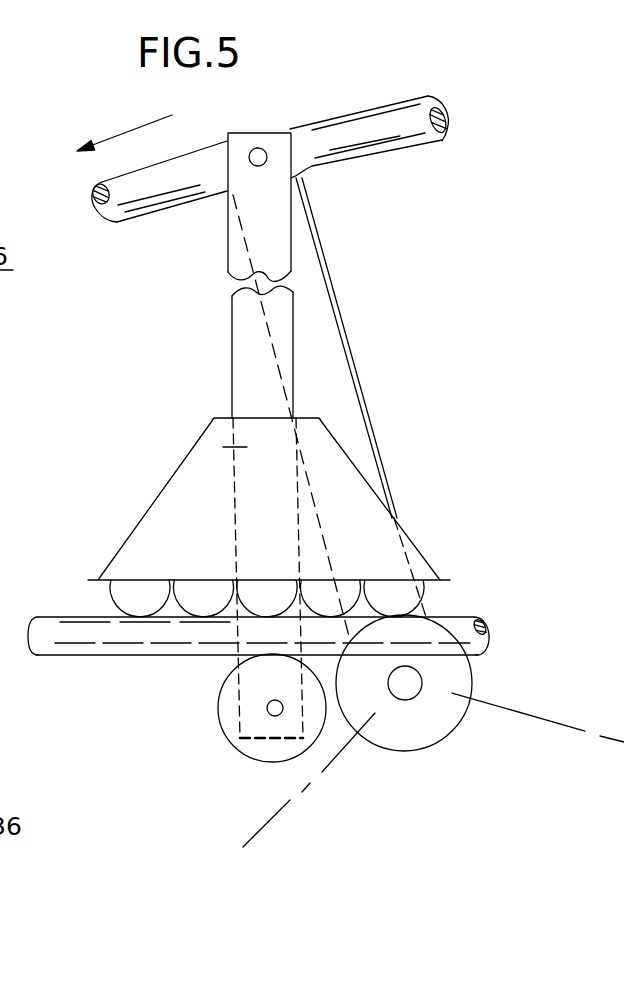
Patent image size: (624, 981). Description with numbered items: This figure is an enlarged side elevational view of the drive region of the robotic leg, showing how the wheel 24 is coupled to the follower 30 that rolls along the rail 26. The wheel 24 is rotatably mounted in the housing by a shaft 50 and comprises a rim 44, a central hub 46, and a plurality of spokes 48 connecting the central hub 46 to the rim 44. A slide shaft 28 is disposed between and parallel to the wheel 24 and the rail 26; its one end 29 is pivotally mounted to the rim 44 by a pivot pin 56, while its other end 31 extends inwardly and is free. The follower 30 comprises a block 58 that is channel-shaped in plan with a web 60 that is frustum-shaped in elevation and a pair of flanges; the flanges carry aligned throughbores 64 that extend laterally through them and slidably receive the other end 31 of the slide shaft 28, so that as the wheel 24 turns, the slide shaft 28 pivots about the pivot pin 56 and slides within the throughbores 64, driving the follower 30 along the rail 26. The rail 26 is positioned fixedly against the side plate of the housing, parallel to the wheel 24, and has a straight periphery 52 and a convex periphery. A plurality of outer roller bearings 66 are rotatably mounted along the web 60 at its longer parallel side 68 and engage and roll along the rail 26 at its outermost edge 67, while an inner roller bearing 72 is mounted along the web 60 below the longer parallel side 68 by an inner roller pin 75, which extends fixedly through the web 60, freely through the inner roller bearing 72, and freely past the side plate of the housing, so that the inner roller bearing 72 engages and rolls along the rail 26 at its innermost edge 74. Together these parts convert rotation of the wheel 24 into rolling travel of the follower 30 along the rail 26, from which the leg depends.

The wheel 24 is at (188, 138).
The one end of slide shaft 29 is at (247, 133).
The rim 44 is at (333, 118).
The pivot pin 56 is at (266, 162).
The slide shaft 28 is at (222, 320).
The spokes 48 is at (315, 313).
The aligned throughbores 64 is at (228, 447).
The block 58 is at (185, 462).
The follower 30 is at (158, 474).
The web 60 is at (158, 517).
The outer roller bearings 66 is at (135, 592).
The outermost edge 67 is at (97, 615).
The longer parallel side 68 is at (200, 580).
The rail 26 is at (50, 614).
The straight periphery 52 is at (85, 648).
The innermost edge 74 is at (183, 652).
The inner roller bearing 72 is at (222, 725).
The inner roller pin 75 is at (283, 712).
The other end of slide shaft 31 is at (265, 745).
The central hub 46 is at (413, 737).
The shaft 50 is at (452, 720).